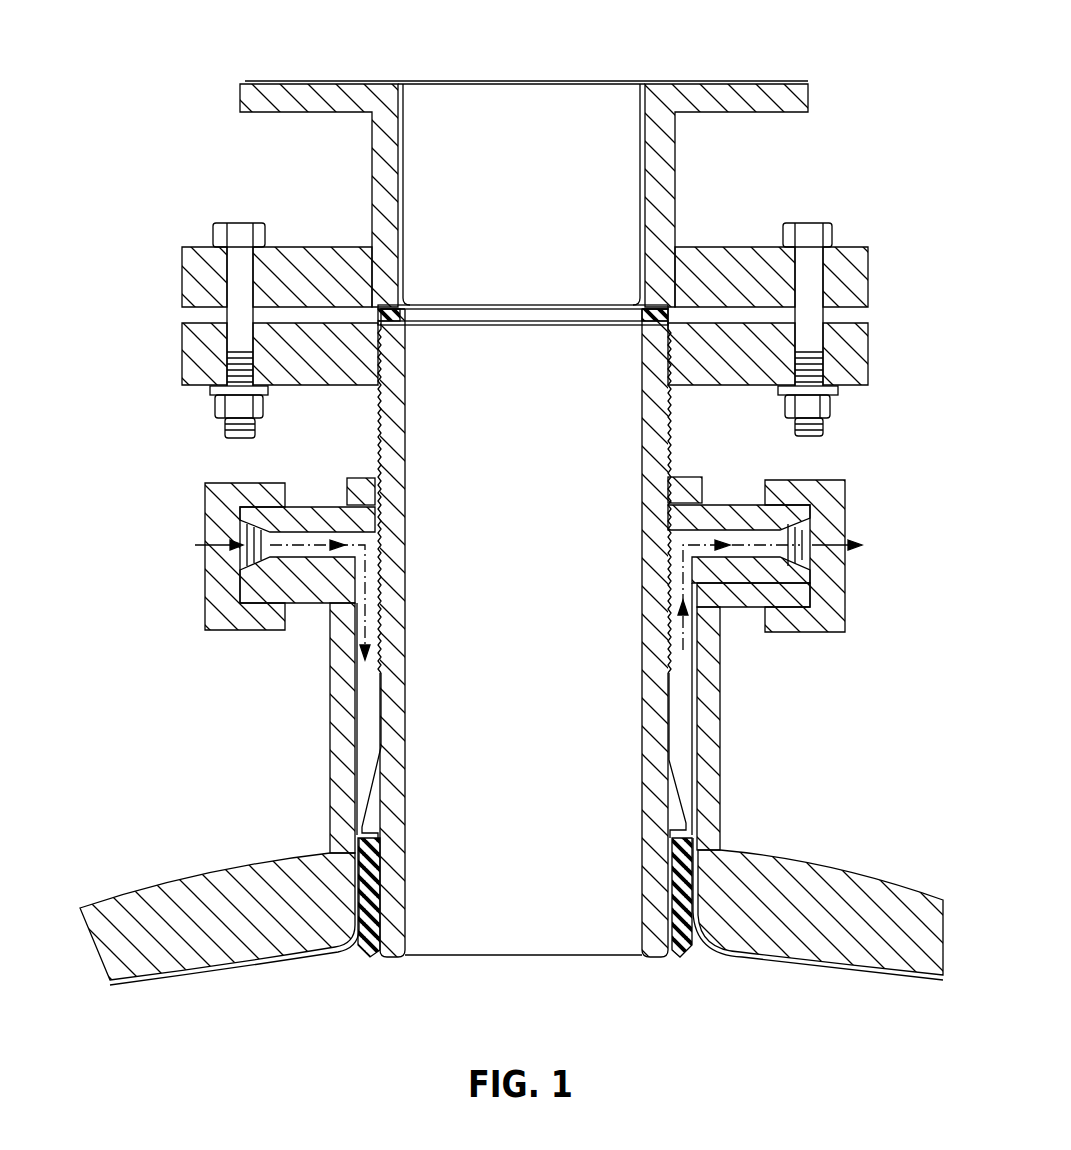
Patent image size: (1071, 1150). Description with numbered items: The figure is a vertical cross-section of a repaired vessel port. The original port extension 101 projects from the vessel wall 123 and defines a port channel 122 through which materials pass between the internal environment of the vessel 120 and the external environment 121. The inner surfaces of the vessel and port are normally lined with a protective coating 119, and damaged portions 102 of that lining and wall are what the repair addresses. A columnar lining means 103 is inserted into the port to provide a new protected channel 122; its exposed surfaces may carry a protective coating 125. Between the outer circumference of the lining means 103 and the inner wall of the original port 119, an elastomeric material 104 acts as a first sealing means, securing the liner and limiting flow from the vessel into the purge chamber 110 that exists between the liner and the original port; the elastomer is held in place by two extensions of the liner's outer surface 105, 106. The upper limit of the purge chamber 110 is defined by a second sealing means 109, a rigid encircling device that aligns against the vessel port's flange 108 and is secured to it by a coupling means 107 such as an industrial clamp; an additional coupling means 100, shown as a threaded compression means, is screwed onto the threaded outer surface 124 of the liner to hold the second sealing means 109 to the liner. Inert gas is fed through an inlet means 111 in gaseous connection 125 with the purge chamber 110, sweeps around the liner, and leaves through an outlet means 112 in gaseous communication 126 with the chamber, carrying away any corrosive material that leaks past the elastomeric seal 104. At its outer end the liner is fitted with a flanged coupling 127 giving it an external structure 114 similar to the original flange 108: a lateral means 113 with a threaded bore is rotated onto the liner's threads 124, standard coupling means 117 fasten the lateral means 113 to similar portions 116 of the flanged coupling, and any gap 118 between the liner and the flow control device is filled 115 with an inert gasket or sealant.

The additional coupling means 100 is at (694, 478).
The original port extension 101 is at (722, 808).
The damaged portions 102 is at (330, 722).
The lining means 103 is at (405, 634).
The elastomeric material 104 is at (702, 948).
The extension of the liner's outer surface 105 is at (640, 845).
The extension of the liner's outer surface 106 is at (672, 962).
The coupling means 107 is at (848, 612).
The vessel port flange 108 is at (745, 620).
The second sealing means 109 is at (742, 512).
The purge chamber 110 is at (692, 722).
The inlet fitting block 111 is at (240, 548).
The outlet means 112 is at (832, 532).
The lateral means 113 is at (868, 352).
The external structure 114 is at (712, 81).
The filler 115 is at (650, 303).
The similar portions of the flanged coupling 116 is at (868, 280).
The standard coupling means 117 is at (836, 404).
The gap 118 is at (402, 316).
The protective coating 119 is at (382, 695).
The internal environment of the vessel 120 is at (537, 1051).
The external environment 121 is at (529, 36).
The port channel 122 is at (573, 529).
The vessel wall 123 is at (860, 872).
The threaded outer surface of the liner means 124 is at (672, 437).
The protective coating 125 is at (326, 535).
The gaseous communication 126 is at (785, 530).
The flanged coupling 127 is at (350, 178).